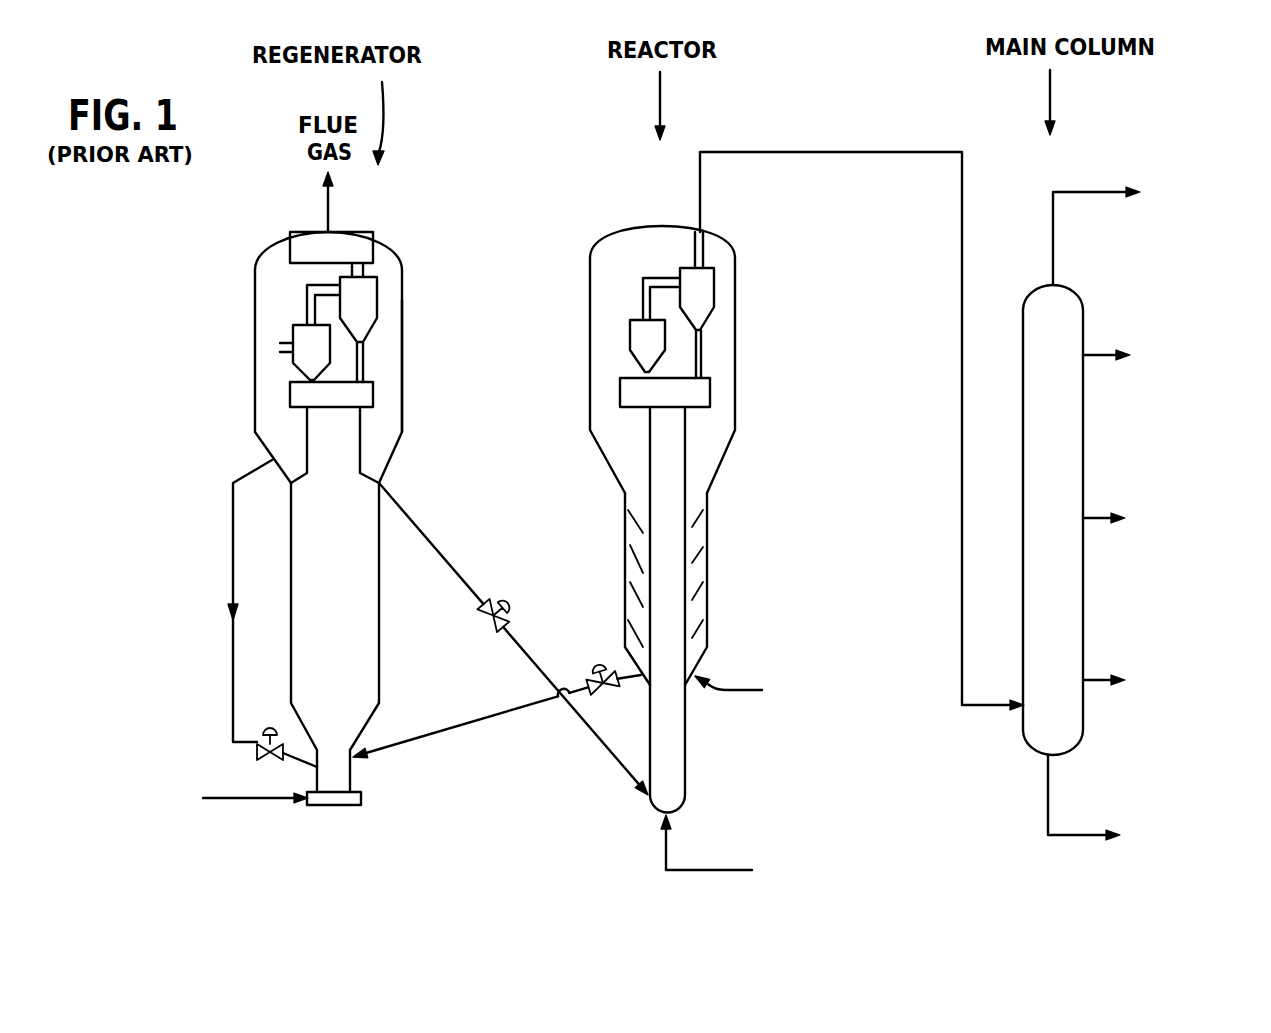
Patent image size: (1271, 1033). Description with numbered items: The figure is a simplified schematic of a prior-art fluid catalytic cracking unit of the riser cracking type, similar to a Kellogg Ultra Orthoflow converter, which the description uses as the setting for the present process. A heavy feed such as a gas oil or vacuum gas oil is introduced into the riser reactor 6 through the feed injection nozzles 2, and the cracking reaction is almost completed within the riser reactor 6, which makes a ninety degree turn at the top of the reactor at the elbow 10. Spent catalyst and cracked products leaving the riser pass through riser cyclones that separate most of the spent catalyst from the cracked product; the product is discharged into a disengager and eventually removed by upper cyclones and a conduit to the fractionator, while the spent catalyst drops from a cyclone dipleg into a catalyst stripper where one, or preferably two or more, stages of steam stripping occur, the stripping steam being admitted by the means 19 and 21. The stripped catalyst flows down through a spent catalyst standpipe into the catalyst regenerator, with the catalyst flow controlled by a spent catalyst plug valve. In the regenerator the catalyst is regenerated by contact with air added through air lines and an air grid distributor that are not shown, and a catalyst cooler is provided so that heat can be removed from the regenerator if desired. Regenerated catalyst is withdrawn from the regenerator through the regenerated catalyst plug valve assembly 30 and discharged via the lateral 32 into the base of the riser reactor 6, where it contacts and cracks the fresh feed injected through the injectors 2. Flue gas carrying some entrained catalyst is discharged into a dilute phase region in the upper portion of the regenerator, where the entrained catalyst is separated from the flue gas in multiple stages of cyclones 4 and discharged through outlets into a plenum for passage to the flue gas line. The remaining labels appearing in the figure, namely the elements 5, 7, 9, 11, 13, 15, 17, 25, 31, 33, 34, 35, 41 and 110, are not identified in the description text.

The feed injection nozzles 2 is at (693, 868).
The cyclones 4 is at (687, 772).
The regenerated catalyst transfer line 5 is at (603, 742).
The riser reactor 6 is at (425, 410).
The spent catalyst transfer line 7 is at (423, 737).
The reactor cyclones 9 is at (627, 322).
The elbow 10 is at (327, 226).
The reactor product vapor line 11 is at (858, 152).
The stripper 13 is at (707, 565).
The catalyst circulation line 15 is at (233, 543).
The regenerator lower section 17 is at (382, 633).
The stripping steam admitting means 19 is at (300, 303).
The stripping steam admitting means 21 is at (402, 383).
The air inlet line 25 is at (250, 798).
The regenerated catalyst plug valve assembly 30 is at (1083, 420).
The gas outlet line 31 is at (1083, 192).
The lateral 32 is at (1093, 355).
The light cycle oil outlet line 33 is at (1090, 518).
The heavy cycle oil outlet line 34 is at (1090, 680).
The main column bottoms line 35 is at (1090, 835).
The stripping steam line 41 is at (722, 687).
The air distributor 110 is at (353, 777).